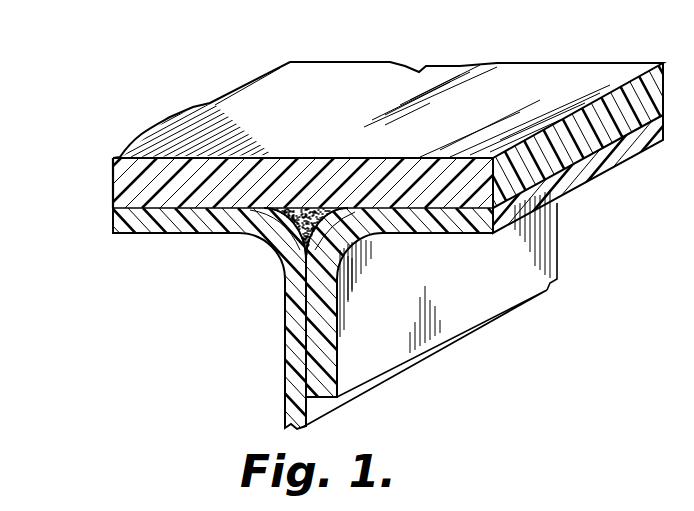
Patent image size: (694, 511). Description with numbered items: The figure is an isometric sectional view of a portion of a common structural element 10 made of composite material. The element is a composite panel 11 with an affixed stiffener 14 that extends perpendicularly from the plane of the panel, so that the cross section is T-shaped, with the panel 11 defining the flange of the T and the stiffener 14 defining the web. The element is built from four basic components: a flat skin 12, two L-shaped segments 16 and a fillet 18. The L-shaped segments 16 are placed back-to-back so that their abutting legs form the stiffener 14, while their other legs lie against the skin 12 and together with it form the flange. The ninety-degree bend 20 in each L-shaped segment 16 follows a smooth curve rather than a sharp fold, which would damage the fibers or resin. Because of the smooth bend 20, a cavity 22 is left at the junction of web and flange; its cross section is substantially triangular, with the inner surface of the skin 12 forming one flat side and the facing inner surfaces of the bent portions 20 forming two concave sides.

The structural element 10 is at (339, 224).
The composite panel 11 is at (339, 170).
The flat skin 12 is at (112, 172).
The stiffener 14 is at (335, 224).
The L-shaped segments 16 is at (300, 305).
The fillet 18 is at (307, 222).
The bend 20 is at (290, 229).
The cavity 22 is at (322, 208).